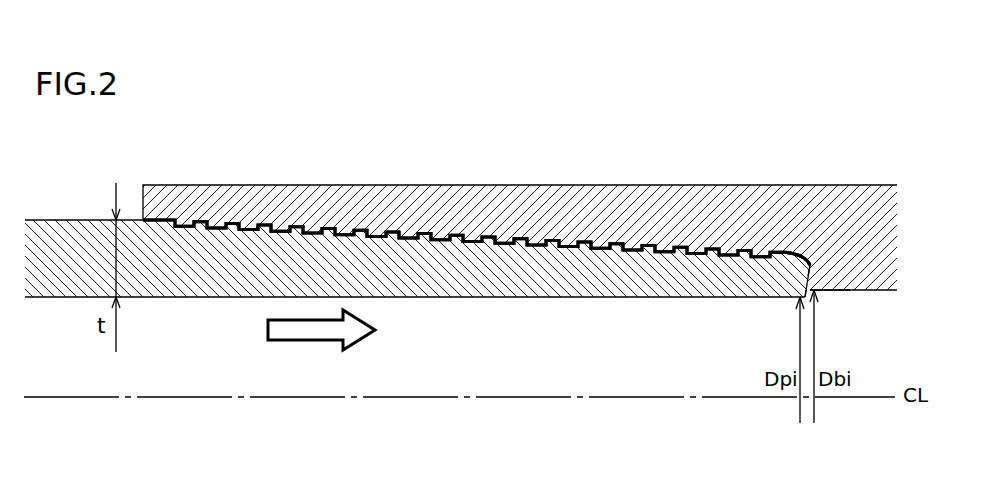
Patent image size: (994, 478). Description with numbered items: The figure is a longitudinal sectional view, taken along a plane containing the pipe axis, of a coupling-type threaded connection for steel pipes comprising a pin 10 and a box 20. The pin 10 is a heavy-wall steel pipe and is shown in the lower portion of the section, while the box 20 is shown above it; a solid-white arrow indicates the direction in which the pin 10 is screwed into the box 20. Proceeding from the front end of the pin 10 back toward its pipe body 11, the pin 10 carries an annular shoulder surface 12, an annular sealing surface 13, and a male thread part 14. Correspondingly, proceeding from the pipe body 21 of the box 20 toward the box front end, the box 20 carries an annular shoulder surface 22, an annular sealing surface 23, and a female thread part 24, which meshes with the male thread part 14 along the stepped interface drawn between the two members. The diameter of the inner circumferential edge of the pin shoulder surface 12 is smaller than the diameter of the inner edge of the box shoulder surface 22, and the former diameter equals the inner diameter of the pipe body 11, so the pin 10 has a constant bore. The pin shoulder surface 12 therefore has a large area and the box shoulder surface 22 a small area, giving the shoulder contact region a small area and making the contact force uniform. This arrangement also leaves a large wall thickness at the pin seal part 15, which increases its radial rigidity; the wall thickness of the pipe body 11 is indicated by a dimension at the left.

The pin 10 is at (89, 211).
The pipe body 11 is at (50, 290).
The shoulder surface 12 is at (813, 292).
The sealing surface 13 is at (810, 263).
The male thread part 14 is at (470, 237).
The pin seal part 15 is at (806, 291).
The box 20 is at (829, 184).
The pipe body 21 is at (892, 292).
The shoulder surface 22 is at (806, 283).
The sealing surface 23 is at (803, 278).
The female thread part 24 is at (490, 232).